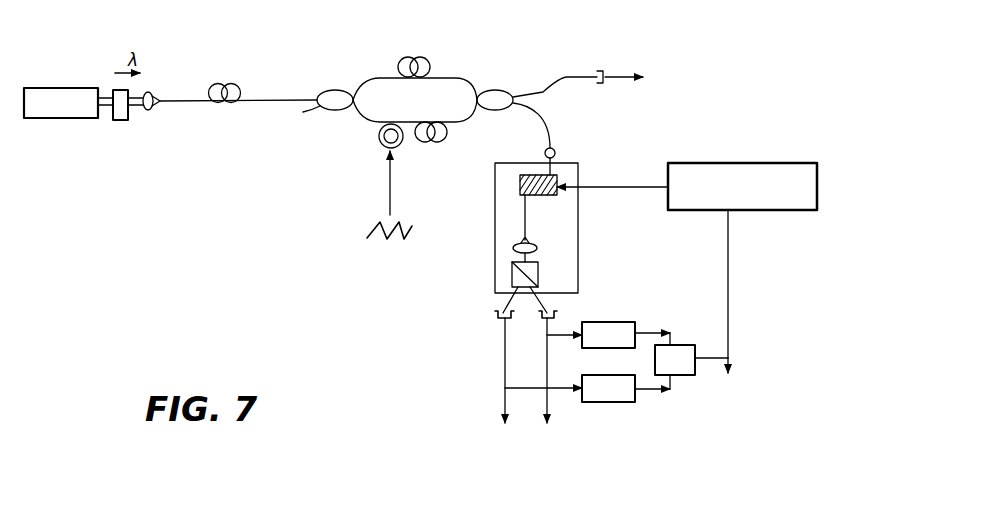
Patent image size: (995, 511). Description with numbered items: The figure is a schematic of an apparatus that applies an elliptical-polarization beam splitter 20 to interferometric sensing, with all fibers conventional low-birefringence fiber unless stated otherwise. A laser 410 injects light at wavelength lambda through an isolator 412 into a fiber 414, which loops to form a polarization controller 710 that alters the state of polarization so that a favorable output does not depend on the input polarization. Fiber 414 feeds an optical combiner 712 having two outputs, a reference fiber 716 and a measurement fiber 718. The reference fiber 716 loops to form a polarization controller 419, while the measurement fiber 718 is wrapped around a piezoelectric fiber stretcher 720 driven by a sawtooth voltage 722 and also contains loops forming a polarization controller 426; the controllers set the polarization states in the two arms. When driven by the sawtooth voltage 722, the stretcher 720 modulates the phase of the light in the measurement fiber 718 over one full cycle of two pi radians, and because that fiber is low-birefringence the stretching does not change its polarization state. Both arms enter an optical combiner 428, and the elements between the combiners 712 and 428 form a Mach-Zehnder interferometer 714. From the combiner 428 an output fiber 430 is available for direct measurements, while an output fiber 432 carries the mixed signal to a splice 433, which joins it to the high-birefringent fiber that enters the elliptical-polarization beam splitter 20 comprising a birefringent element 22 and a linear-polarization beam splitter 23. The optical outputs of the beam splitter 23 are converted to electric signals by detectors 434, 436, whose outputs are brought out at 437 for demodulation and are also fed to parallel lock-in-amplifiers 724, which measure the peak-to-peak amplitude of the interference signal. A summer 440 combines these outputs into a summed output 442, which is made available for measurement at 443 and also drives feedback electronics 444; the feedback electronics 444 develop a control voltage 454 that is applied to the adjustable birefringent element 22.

The laser 410 is at (68, 88).
The isolator 412 is at (113, 121).
The fiber 414 is at (177, 103).
The polarization controller 710 is at (238, 85).
The optical combiner 712 is at (342, 110).
The Mach-Zehnder interferometer 714 is at (366, 52).
The reference fiber 716 is at (360, 84).
The measurement fiber 718 is at (415, 109).
The polarization controller 419 is at (420, 57).
The polarization controller 426 is at (417, 140).
The piezoelectric fiber stretcher 720 is at (378, 141).
The sawtooth voltage 722 is at (367, 236).
The optical combiner 428 is at (498, 90).
The output fiber 430 is at (625, 72).
The output fiber 432 is at (552, 118).
The splice 433 is at (546, 150).
The elliptical-polarization beam splitter 20 is at (578, 240).
The birefringent element 22 is at (558, 176).
The linear-polarization beam splitter 23 is at (540, 268).
The detector 434 is at (495, 316).
The detector 436 is at (556, 316).
The detector outputs 437 is at (550, 408).
The parallel lock-in-amplifiers 724 is at (597, 375).
The summer 440 is at (680, 345).
The summed output 442 is at (728, 332).
The measurement output 443 is at (716, 384).
The feedback electronics 444 is at (748, 162).
The control voltage 454 is at (592, 188).